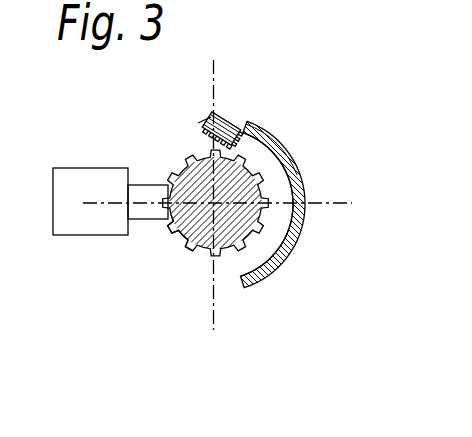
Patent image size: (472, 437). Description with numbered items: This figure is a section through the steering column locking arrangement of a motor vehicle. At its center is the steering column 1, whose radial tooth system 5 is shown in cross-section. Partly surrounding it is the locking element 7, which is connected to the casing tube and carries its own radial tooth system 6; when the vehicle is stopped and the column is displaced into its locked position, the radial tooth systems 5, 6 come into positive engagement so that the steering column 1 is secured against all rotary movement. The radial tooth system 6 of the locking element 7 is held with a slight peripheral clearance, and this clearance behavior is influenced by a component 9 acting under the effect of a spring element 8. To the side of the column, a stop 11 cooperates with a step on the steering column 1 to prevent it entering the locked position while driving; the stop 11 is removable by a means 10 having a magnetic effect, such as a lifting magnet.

The steering column 1 is at (205, 251).
The radial tooth system 5 is at (182, 243).
The radial tooth system 6 is at (258, 153).
The locking element 7 is at (288, 188).
The spring element 8 is at (238, 120).
The component 9 is at (218, 112).
The means having a magnetic effect 10 is at (93, 210).
The stop 11 is at (147, 207).